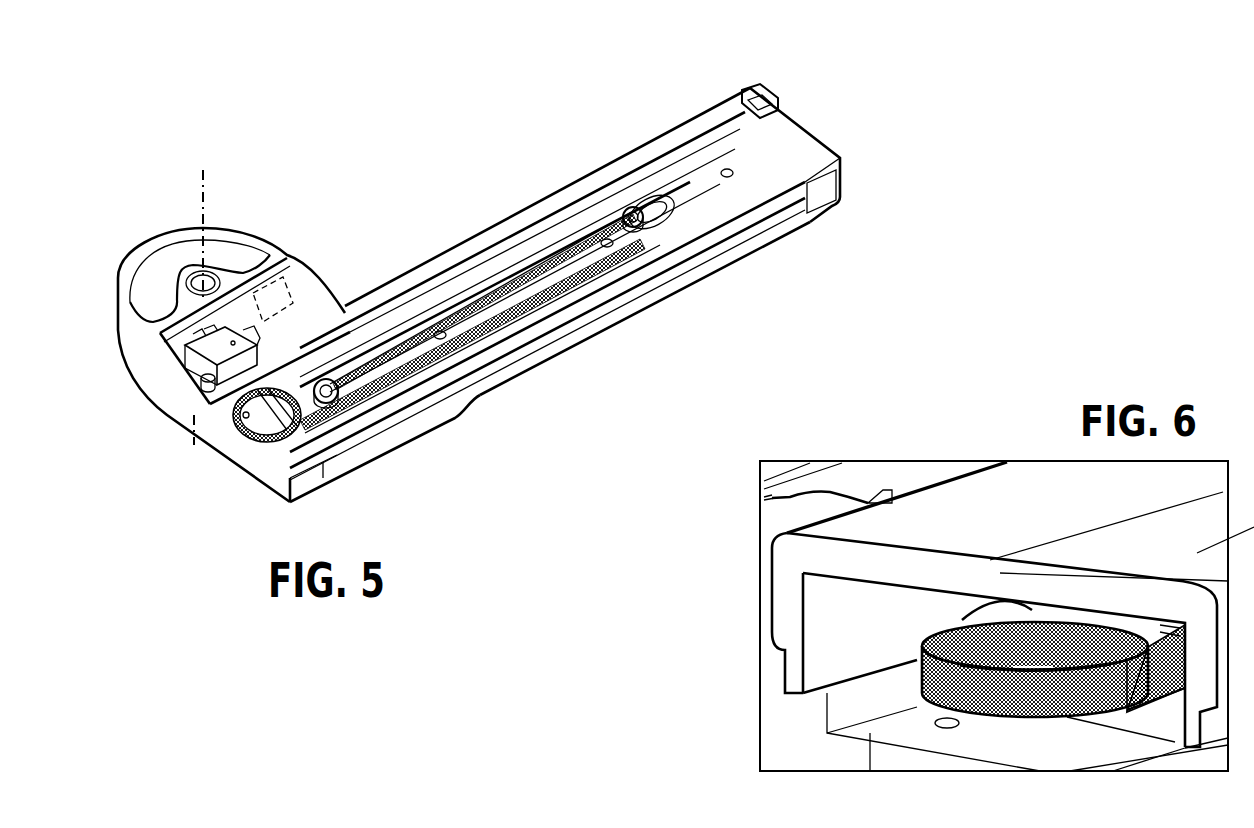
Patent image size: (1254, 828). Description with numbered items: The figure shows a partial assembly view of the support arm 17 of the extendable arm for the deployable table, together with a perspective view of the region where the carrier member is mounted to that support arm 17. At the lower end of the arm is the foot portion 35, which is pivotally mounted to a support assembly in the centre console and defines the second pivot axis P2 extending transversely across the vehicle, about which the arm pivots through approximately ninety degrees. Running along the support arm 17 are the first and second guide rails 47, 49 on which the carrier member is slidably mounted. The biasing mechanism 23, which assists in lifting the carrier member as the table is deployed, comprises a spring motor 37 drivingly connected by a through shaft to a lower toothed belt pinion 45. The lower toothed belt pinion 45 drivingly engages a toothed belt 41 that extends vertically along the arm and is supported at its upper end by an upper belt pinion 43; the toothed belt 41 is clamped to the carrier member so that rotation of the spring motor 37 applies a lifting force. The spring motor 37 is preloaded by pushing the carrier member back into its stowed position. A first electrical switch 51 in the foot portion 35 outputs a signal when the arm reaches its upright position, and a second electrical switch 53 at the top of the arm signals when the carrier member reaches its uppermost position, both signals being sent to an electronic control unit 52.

In FIG. 5, the second pivot axis P2 is at (209, 292).
In FIG. 6, the support arm 17 is at (898, 758).
In FIG. 5, the biasing mechanism 23 is at (205, 451).
In FIG. 5, the foot portion 35 is at (272, 226).
In FIG. 5, the spring motor 37 is at (266, 428).
In FIG. 6, the spring motor 37 is at (1052, 693).
In FIG. 5, the toothed belt 41 is at (400, 378).
In FIG. 5, the upper belt pinion 43 is at (624, 211).
In FIG. 5, the lower toothed belt pinion 45 is at (330, 380).
In FIG. 5, the first guide rail 47 is at (766, 185).
In FIG. 5, the second guide rail 49 is at (707, 134).
In FIG. 5, the first electrical switch 51 is at (196, 358).
In FIG. 5, the electronic control unit 52 is at (306, 276).
In FIG. 5, the second electrical switch 53 is at (765, 106).